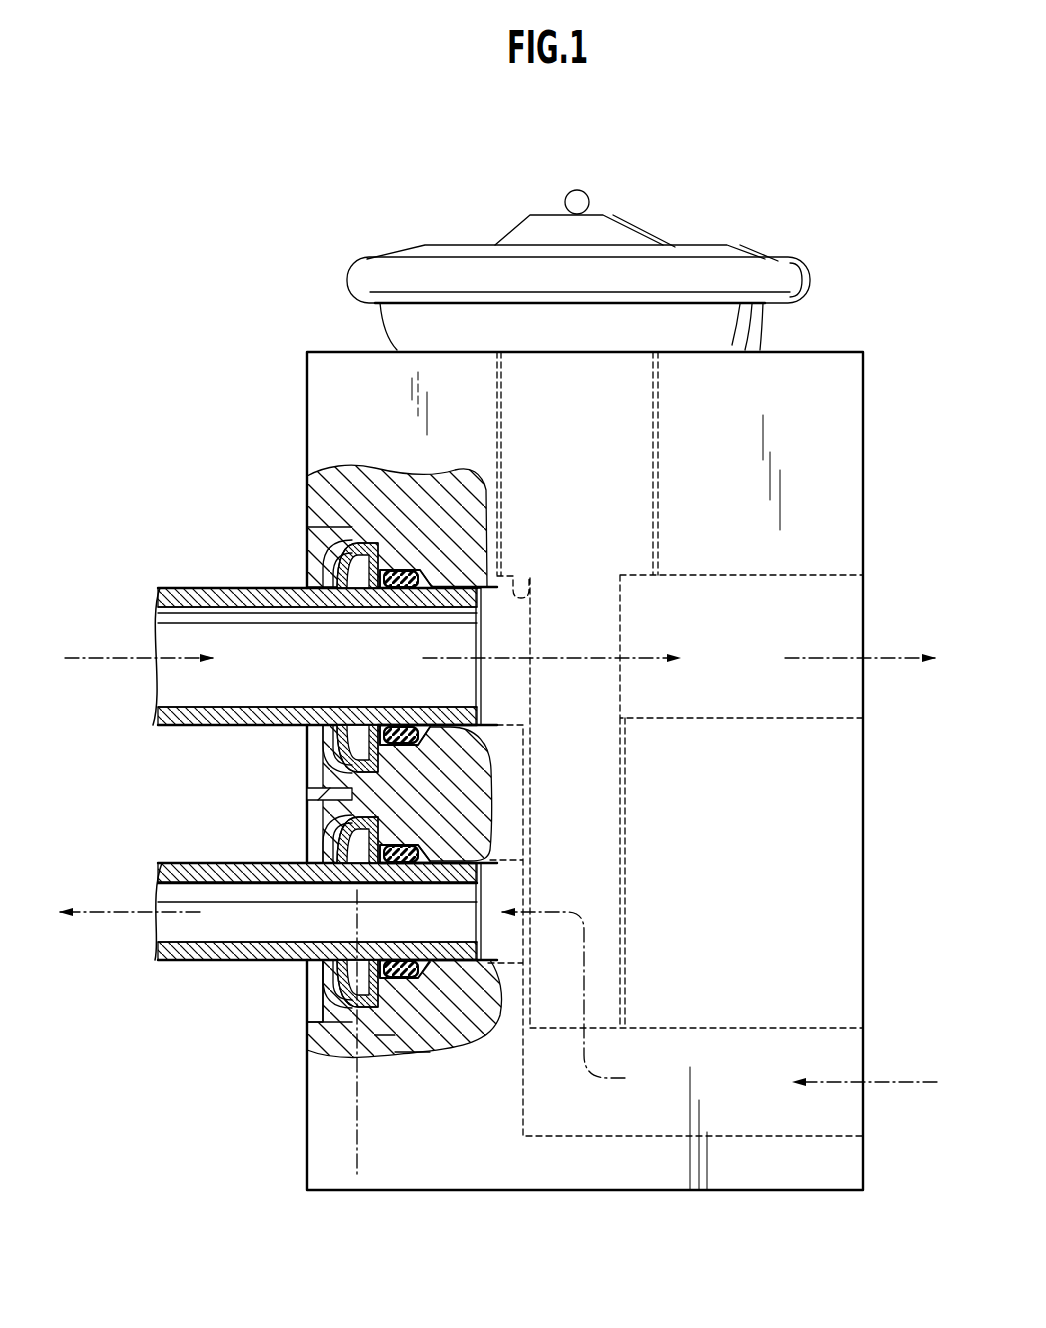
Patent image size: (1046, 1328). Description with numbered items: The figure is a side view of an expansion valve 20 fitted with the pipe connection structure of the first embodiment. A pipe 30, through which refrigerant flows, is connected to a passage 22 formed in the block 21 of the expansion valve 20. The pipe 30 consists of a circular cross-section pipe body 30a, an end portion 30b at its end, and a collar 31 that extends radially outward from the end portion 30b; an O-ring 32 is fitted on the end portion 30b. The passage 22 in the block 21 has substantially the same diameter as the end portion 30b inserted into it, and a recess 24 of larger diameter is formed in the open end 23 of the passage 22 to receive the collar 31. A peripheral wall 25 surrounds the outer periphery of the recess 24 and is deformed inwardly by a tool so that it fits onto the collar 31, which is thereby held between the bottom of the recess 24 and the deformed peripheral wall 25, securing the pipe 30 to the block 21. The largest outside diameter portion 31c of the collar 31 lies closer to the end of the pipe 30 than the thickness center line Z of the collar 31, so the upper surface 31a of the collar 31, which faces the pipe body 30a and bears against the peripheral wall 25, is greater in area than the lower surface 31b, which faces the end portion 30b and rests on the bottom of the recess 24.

The expansion valve 20 is at (472, 232).
The block 21 is at (333, 378).
The passage 22 is at (537, 587).
The open end 23 is at (330, 850).
The recess 24 is at (347, 793).
The peripheral wall 25 is at (347, 826).
The pipe 30 is at (190, 585).
The pipe body 30a is at (177, 960).
The end portion 30b is at (405, 968).
The collar 31 is at (340, 1024).
The upper surface 31a is at (327, 1000).
The lower surface 31b is at (405, 1048).
The largest outside diameter portion 31c is at (385, 1035).
The O-ring 32 is at (420, 980).
The thickness center line Z is at (357, 1158).